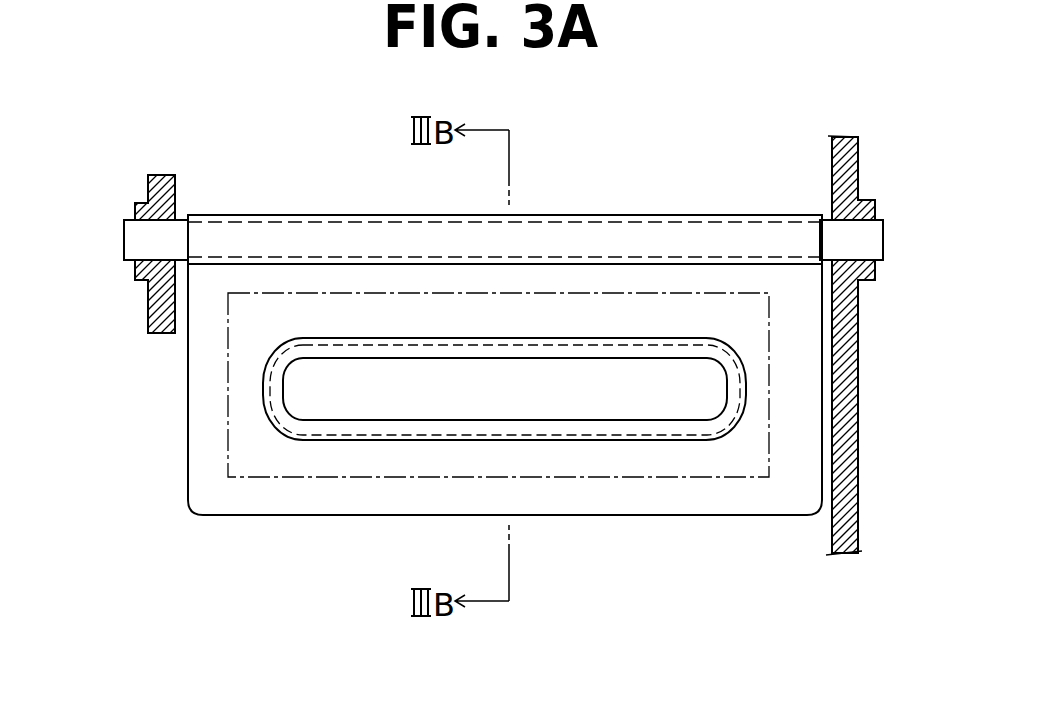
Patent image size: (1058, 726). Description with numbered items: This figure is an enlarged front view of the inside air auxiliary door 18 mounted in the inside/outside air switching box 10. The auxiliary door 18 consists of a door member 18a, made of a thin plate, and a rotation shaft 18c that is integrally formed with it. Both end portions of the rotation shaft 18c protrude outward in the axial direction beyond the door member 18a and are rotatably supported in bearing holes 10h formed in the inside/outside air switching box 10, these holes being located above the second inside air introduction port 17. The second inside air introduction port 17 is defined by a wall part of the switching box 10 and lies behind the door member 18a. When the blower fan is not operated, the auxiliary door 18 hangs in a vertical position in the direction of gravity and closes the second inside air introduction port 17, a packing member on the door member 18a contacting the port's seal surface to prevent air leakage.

The inside/outside air switching box 10 is at (852, 440).
The bearing holes 10h is at (135, 205).
The second inside air introduction port 17 is at (600, 477).
The inside air auxiliary door 18 is at (340, 485).
The door member 18a is at (198, 433).
The rotation shaft 18c is at (135, 243).